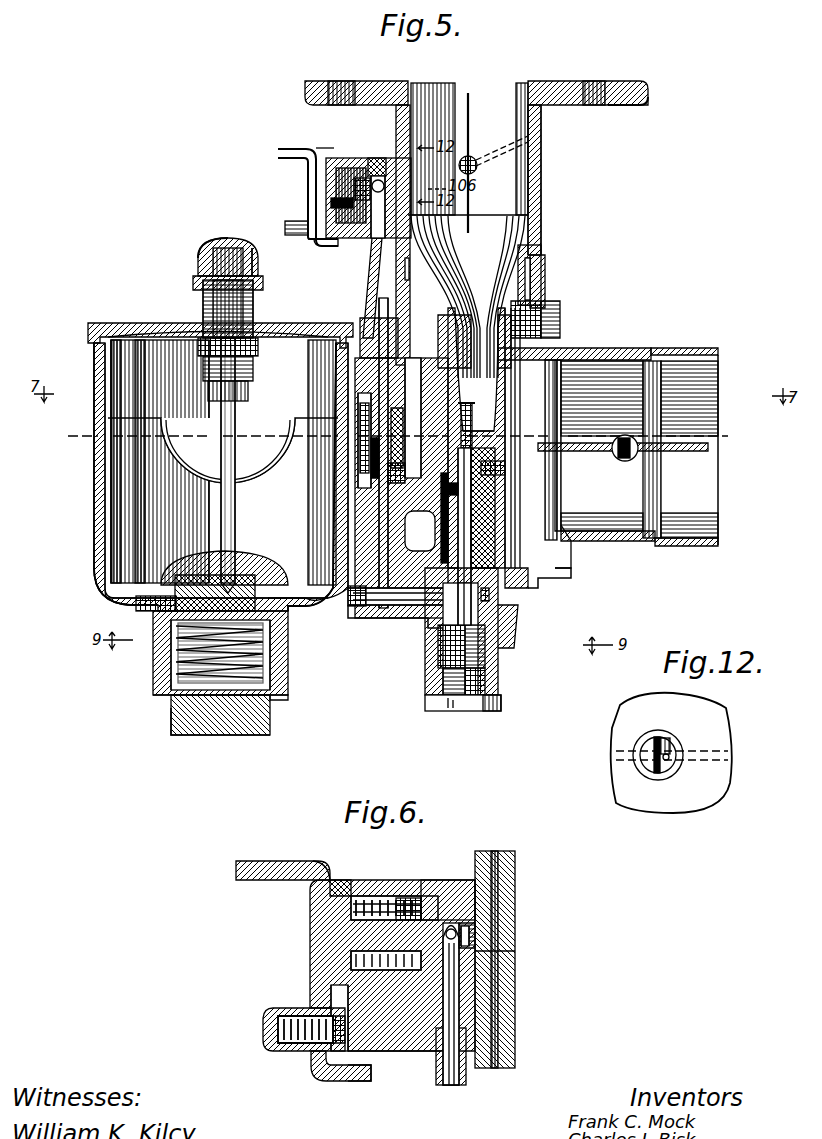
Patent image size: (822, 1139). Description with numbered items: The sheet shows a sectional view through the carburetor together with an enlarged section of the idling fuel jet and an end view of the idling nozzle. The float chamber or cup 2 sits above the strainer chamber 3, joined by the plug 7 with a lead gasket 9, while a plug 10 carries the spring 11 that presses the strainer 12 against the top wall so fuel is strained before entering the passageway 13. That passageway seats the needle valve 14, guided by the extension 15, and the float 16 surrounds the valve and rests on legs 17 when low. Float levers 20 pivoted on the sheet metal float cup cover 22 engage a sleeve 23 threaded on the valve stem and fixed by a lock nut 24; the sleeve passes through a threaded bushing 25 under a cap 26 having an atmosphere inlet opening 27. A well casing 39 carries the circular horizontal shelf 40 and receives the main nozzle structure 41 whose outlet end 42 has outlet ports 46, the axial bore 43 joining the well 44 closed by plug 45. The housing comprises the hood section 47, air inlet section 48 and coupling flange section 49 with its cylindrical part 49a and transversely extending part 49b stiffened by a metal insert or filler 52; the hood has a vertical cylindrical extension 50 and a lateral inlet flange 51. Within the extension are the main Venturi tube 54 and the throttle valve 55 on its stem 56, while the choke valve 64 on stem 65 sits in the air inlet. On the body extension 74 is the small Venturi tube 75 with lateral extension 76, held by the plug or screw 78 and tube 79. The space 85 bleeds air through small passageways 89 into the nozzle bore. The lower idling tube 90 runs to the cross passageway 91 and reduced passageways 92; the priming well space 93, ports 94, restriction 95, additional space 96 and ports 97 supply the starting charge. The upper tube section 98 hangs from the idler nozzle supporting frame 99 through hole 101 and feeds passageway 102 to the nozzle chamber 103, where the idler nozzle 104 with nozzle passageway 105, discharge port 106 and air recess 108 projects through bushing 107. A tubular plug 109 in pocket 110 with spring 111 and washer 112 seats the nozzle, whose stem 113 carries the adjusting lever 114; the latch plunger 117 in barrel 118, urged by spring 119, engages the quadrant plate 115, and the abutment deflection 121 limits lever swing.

In FIG. 5, the float chamber or cup 2 is at (90, 505).
In FIG. 5, the strainer chamber 3 is at (160, 655).
In FIG. 5, the plug 7 is at (246, 560).
In FIG. 5, the gasket 9 is at (286, 604).
In FIG. 5, the plug 10 is at (215, 716).
In FIG. 5, the spring 11 is at (163, 697).
In FIG. 5, the strainer 12 is at (170, 715).
In FIG. 5, the passageway 13 is at (146, 604).
In FIG. 5, the needle valve 14 is at (228, 404).
In FIG. 5, the extension 15 is at (232, 542).
In FIG. 5, the float 16 is at (164, 411).
In FIG. 5, the legs 17 is at (108, 592).
In FIG. 5, the float levers 20 is at (240, 382).
In FIG. 5, the float cup cover 22 is at (142, 320).
In FIG. 5, the sleeve 23 is at (246, 270).
In FIG. 5, the lock nut 24 is at (200, 242).
In FIG. 5, the threaded bushing 25 is at (198, 290).
In FIG. 5, the cap 26 is at (192, 255).
In FIG. 5, the atmosphere inlet opening 27 is at (242, 262).
In FIG. 5, the well casing 39 is at (465, 487).
In FIG. 5, the circular horizontal shelf 40 is at (560, 570).
In FIG. 5, the main nozzle structure 41 is at (487, 500).
In FIG. 5, the outlet end 42 is at (458, 392).
In FIG. 5, the axial bore 43 is at (482, 590).
In FIG. 5, the well 44 is at (468, 636).
In FIG. 5, the plug 45 is at (462, 697).
In FIG. 5, the outlet ports 46 is at (480, 450).
In FIG. 5, the hood section 47 is at (340, 522).
In FIG. 5, the air inlet section 48 is at (620, 345).
In FIG. 5, the coupling flange section 49 is at (540, 112).
In FIG. 5, the cylindrical part 49a is at (536, 170).
In FIG. 5, the transversely extending part 49b is at (612, 99).
In FIG. 5, the vertical cylindrical extension 50 is at (538, 184).
In FIG. 5, the lateral inlet flange 51 is at (590, 340).
In FIG. 5, the metal insert or filler 52 is at (546, 78).
In FIG. 5, the main Venturi tube 54 is at (530, 268).
In FIG. 5, the throttle valve 55 is at (460, 82).
In FIG. 12, the throttle valve 55 is at (726, 732).
In FIG. 5, the stem 56 is at (464, 150).
In FIG. 5, the choke valve 64 is at (705, 438).
In FIG. 5, the stem 65 is at (620, 427).
In FIG. 5, the extension 74 is at (380, 598).
In FIG. 5, the small Venturi tube 75 is at (526, 292).
In FIG. 5, the lateral extension 76 is at (420, 380).
In FIG. 5, the plug or screw 78 is at (458, 318).
In FIG. 5, the tube 79 is at (350, 405).
In FIG. 5, the space 85 is at (505, 512).
In FIG. 5, the small passageways 89 is at (470, 478).
In FIG. 5, the lower part of the idling tube structure 90 is at (370, 300).
In FIG. 5, the cross passageway 91 is at (346, 600).
In FIG. 5, the reduced passageways 92 is at (415, 612).
In FIG. 5, the space 93 is at (350, 392).
In FIG. 5, the ports 94 is at (380, 445).
In FIG. 5, the restriction 95 is at (378, 465).
In FIG. 5, the additional priming well space 96 is at (360, 432).
In FIG. 5, the ports 97 is at (362, 455).
In FIG. 5, the upper section of the idler tube structure 98 is at (370, 247).
In FIG. 6, the upper section of the idler tube structure 98 is at (443, 1070).
In FIG. 5, the idler nozzle supporting frame 99 is at (335, 238).
In FIG. 6, the idler nozzle supporting frame 99 is at (403, 1043).
In FIG. 5, the hole 101 is at (366, 320).
In FIG. 5, the passageway 102 is at (323, 196).
In FIG. 6, the passageway 102 is at (445, 978).
In FIG. 5, the nozzle chamber 103 is at (355, 158).
In FIG. 6, the nozzle chamber 103 is at (432, 895).
In FIG. 5, the idler nozzle 104 is at (372, 152).
In FIG. 6, the idler nozzle 104 is at (470, 925).
In FIG. 12, the idler nozzle 104 is at (640, 755).
In FIG. 5, the nozzle passageway 105 is at (345, 183).
In FIG. 6, the nozzle passageway 105 is at (470, 908).
In FIG. 6, the discharge port 106 is at (465, 917).
In FIG. 12, the discharge port 106 is at (662, 746).
In FIG. 5, the bushing 107 is at (393, 133).
In FIG. 6, the bushing 107 is at (508, 942).
In FIG. 12, the recess 108 is at (655, 740).
In FIG. 6, the tubular plug 109 is at (330, 878).
In FIG. 6, the pocket 110 is at (385, 888).
In FIG. 6, the spring 111 is at (402, 889).
In FIG. 6, the washer 112 is at (425, 887).
In FIG. 6, the nozzle stem 113 is at (312, 920).
In FIG. 5, the adjusting lever 114 is at (272, 143).
In FIG. 6, the adjusting lever 114 is at (304, 890).
In FIG. 5, the quadrant plate 115 is at (310, 148).
In FIG. 6, the quadrant plate 115 is at (348, 872).
In FIG. 6, the latch plunger 117 is at (322, 1068).
In FIG. 5, the barrel 118 is at (292, 215).
In FIG. 6, the barrel 118 is at (284, 1044).
In FIG. 6, the spring 119 is at (282, 1008).
In FIG. 6, the abutment deflection 121 is at (355, 1070).